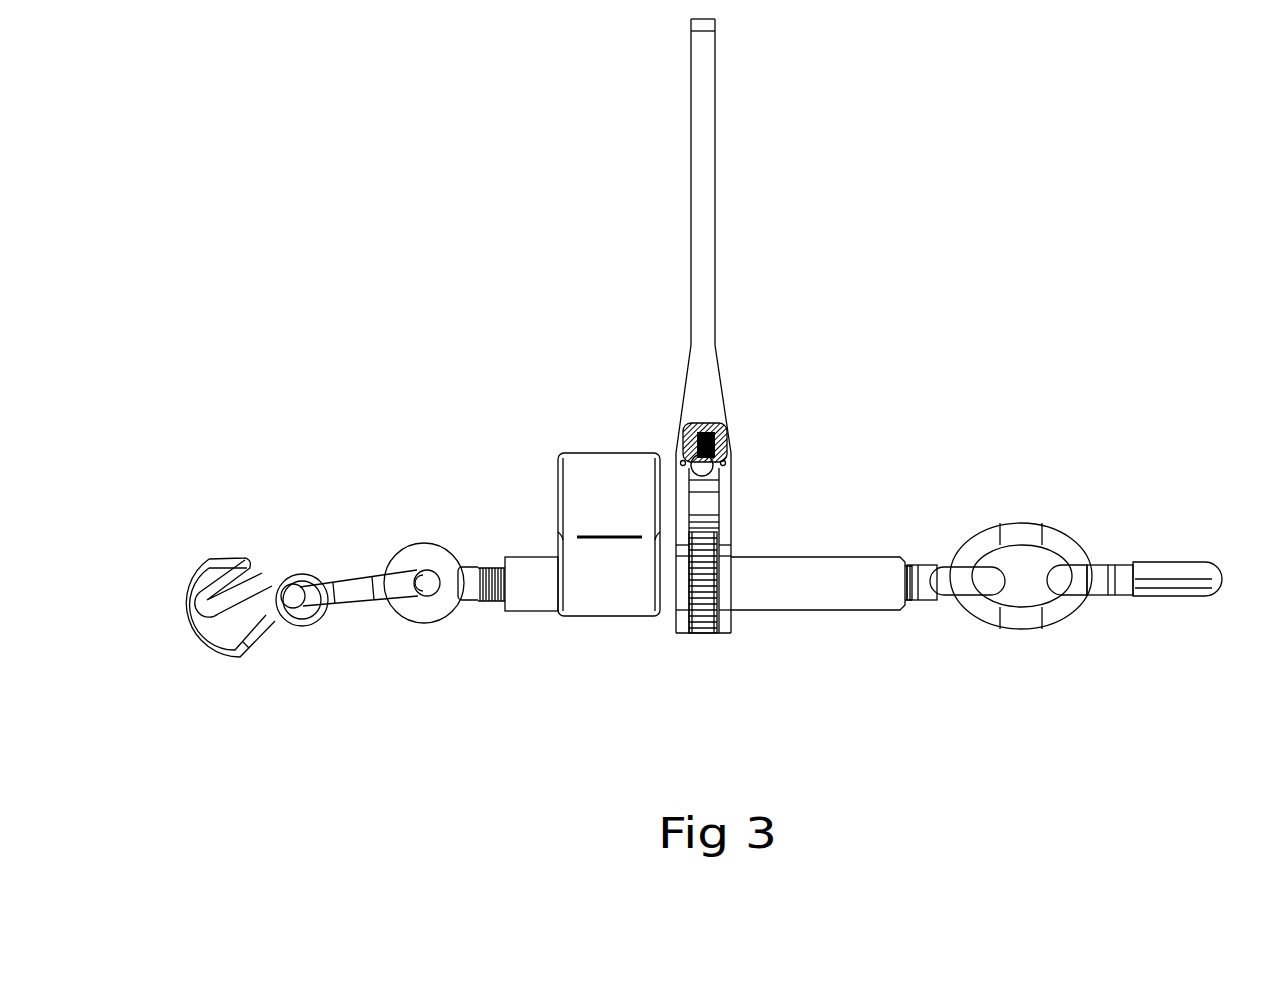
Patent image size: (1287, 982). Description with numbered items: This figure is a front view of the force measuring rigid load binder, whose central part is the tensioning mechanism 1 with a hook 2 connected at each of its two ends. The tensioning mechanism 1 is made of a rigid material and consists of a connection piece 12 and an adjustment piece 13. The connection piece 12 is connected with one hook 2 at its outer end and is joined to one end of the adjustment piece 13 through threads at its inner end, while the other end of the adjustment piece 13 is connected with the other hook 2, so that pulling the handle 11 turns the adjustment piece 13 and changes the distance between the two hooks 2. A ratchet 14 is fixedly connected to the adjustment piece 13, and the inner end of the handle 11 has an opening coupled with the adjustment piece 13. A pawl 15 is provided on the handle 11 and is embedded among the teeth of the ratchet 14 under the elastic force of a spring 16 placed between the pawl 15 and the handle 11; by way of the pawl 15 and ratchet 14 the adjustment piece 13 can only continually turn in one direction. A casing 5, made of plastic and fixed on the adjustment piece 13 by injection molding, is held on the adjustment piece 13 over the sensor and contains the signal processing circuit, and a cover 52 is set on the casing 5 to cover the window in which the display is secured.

The tensioning mechanism 1 is at (693, 408).
The hook 2 is at (203, 583).
The casing 5 is at (530, 568).
The cover 52 is at (558, 472).
The handle 11 is at (700, 118).
The connection piece 12 is at (470, 590).
The adjustment piece 13 is at (828, 582).
The ratchet 14 is at (707, 618).
The pawl 15 is at (707, 488).
The spring 16 is at (722, 423).